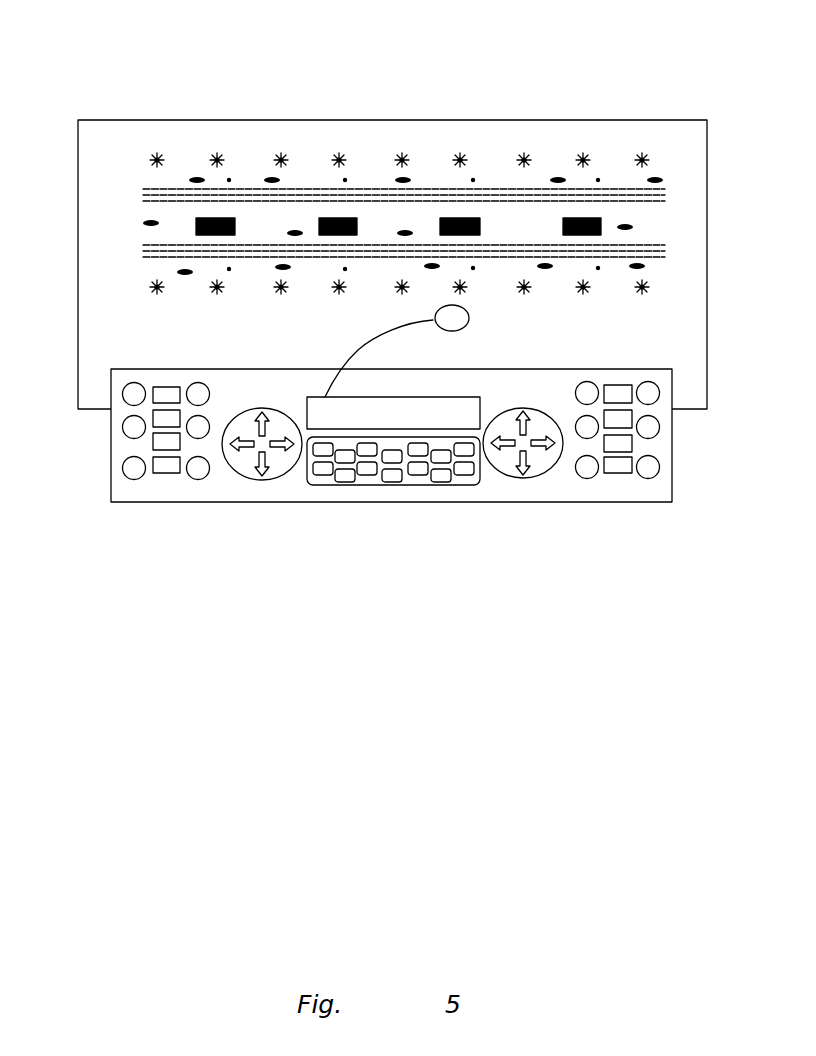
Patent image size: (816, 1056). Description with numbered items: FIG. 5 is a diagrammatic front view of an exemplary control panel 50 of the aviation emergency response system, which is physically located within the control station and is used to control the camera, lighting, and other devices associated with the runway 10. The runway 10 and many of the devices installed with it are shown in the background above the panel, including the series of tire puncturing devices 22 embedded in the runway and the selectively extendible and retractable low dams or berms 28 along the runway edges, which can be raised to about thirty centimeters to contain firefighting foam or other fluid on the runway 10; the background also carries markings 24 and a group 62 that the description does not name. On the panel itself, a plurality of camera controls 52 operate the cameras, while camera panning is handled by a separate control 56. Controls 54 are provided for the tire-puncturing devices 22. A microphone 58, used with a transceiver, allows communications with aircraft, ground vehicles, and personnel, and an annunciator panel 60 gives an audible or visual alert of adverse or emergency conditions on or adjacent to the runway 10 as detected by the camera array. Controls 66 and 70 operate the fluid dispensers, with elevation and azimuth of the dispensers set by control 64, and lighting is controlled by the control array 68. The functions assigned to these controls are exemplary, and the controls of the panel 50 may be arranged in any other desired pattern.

The runway 10 is at (278, 218).
The tire puncturing device 22 is at (563, 232).
The star-shaped markers 24 is at (457, 154).
The low dams or berms 28 is at (541, 188).
The control panel 50 is at (110, 502).
The camera controls 52 is at (126, 402).
The tire-puncturing device controls 54 is at (182, 450).
The camera panning control 56 is at (268, 478).
The microphone 58 is at (457, 331).
The annunciator panel 60 is at (372, 397).
The keypad 62 is at (418, 485).
The dispenser elevation and azimuth control 64 is at (531, 479).
The fluid dispenser controls 66 is at (580, 437).
The lighting control array 68 is at (612, 420).
The fluid dispenser controls 70 is at (658, 393).